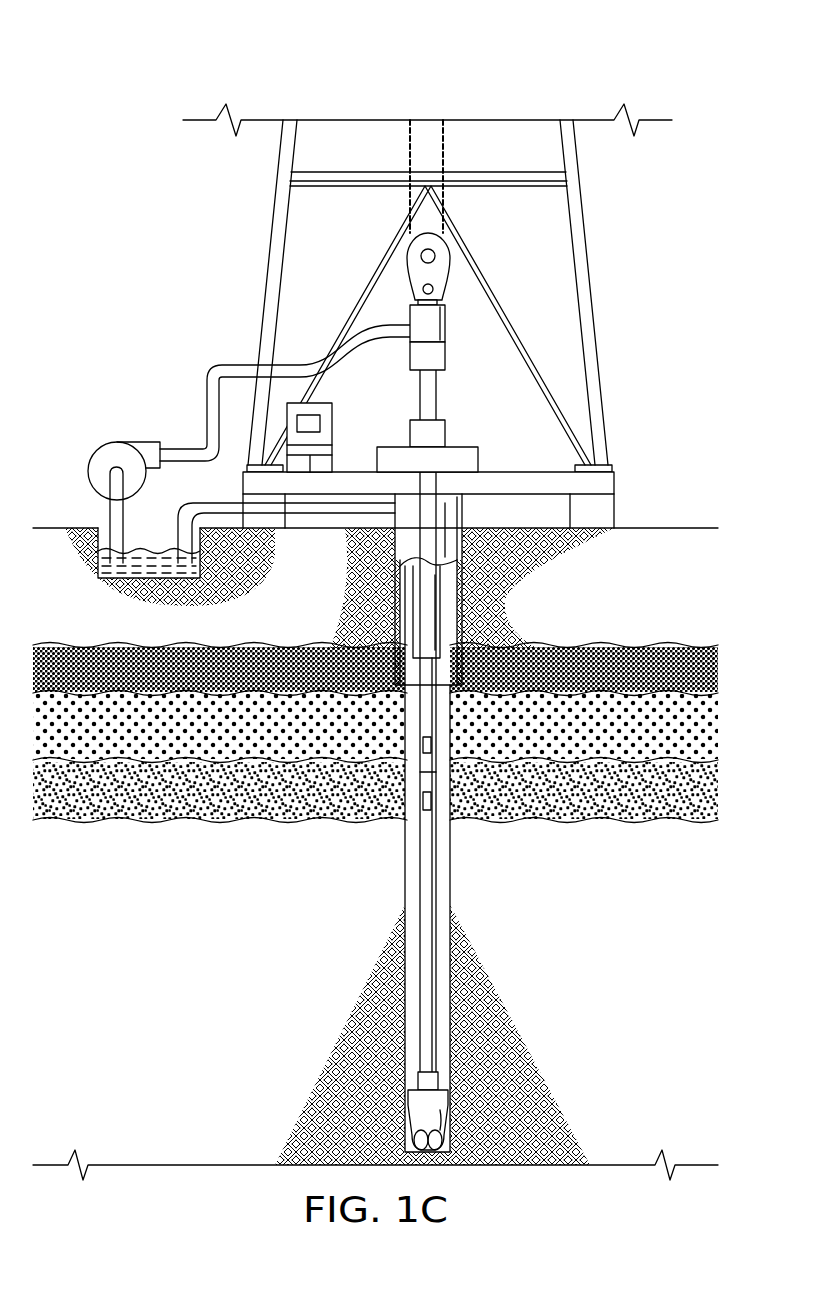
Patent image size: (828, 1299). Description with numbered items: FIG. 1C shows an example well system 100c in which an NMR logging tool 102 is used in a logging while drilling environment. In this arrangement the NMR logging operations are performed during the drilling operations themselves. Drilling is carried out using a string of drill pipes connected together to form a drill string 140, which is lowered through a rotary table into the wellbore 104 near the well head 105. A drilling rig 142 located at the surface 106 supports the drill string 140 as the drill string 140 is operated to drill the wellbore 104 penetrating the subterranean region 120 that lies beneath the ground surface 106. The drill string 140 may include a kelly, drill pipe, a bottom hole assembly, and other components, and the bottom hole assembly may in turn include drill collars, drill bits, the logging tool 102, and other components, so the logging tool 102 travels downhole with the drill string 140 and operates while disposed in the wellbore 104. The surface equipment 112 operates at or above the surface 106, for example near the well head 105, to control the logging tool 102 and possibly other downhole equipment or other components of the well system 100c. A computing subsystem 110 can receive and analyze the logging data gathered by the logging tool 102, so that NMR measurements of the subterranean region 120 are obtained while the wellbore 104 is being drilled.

The well system 100c is at (153, 91).
The logging tool 102 is at (419, 891).
The wellbore 104 is at (405, 845).
The well head 105 is at (463, 446).
The ground surface 106 is at (656, 527).
The computing subsystem 110 is at (318, 402).
The surface equipment 112 is at (670, 325).
The subterranean region 120 is at (612, 634).
The drill string 140 is at (410, 700).
The drilling rig 142 is at (198, 250).